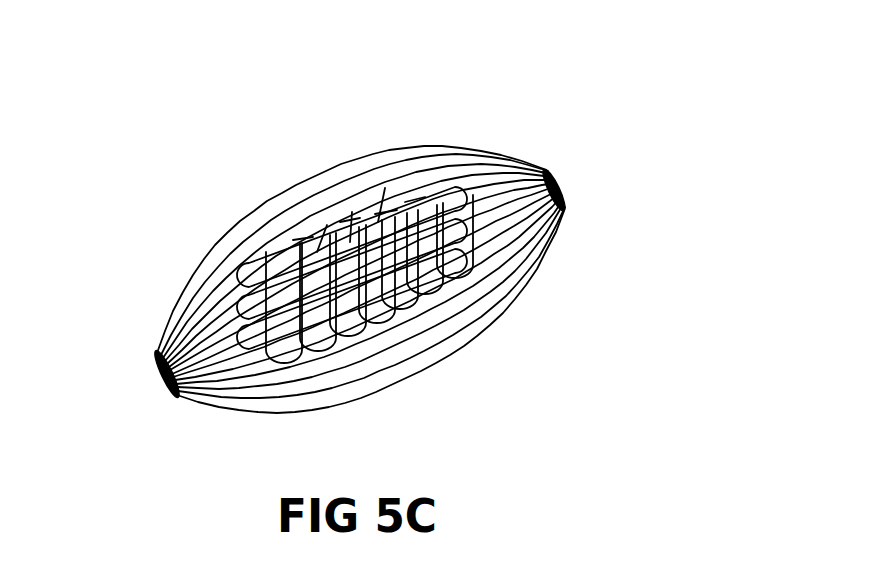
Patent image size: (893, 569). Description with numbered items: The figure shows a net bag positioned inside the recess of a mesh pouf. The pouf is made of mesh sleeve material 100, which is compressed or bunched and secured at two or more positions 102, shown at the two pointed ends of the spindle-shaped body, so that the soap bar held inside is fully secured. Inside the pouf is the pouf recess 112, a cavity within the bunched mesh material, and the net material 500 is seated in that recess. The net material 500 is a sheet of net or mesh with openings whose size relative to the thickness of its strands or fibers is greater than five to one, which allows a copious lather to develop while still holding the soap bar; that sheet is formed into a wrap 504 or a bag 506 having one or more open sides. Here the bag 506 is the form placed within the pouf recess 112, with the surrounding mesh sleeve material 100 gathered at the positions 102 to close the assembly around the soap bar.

The mesh sleeve material 100 is at (483, 333).
The positions 102 is at (162, 383).
The pouf recess 112 is at (262, 260).
The net material 500 is at (373, 198).
The wrap 504 is at (450, 189).
The bag 506 is at (450, 189).